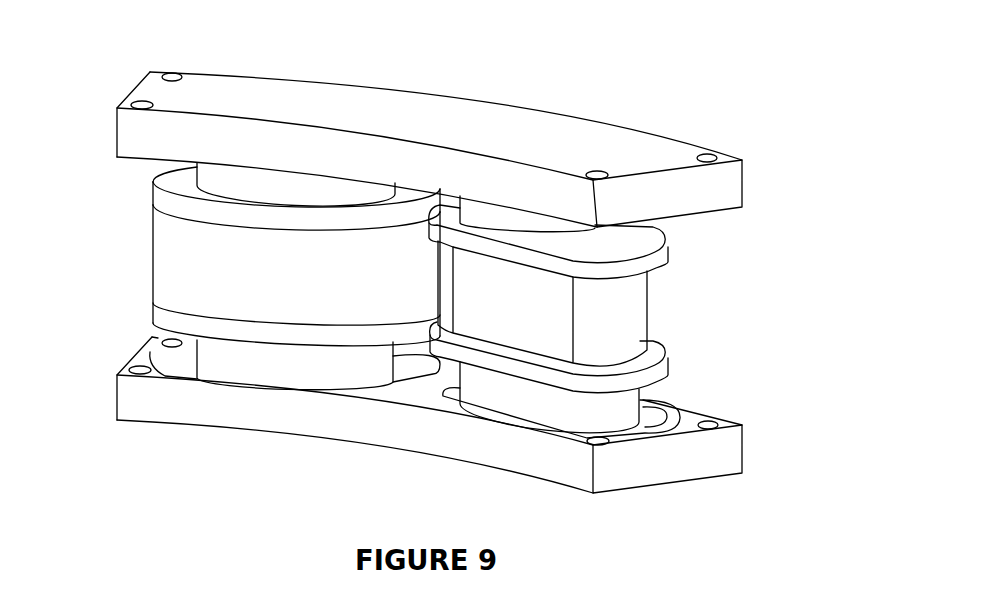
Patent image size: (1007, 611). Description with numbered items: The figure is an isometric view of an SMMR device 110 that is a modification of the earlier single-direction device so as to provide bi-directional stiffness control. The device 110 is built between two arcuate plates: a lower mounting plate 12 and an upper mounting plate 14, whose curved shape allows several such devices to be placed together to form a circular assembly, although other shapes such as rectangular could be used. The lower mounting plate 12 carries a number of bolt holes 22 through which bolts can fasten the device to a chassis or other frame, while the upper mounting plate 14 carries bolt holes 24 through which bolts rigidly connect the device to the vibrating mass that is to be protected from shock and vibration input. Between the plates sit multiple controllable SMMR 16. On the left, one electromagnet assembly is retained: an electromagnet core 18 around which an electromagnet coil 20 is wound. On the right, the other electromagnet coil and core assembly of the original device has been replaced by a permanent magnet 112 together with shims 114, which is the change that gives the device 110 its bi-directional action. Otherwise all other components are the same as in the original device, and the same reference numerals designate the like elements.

The lower mounting plate 12 is at (245, 417).
The upper mounting plate 14 is at (692, 191).
The controllable SMMR 16 is at (213, 170).
The electromagnet core 18 is at (181, 205).
The electromagnet coil 20 is at (182, 255).
The bolt holes 22 is at (132, 371).
The bolt holes 24 is at (132, 104).
The SMMR device 110 is at (650, 98).
The permanent magnet 112 is at (637, 307).
The shims 114 is at (643, 262).